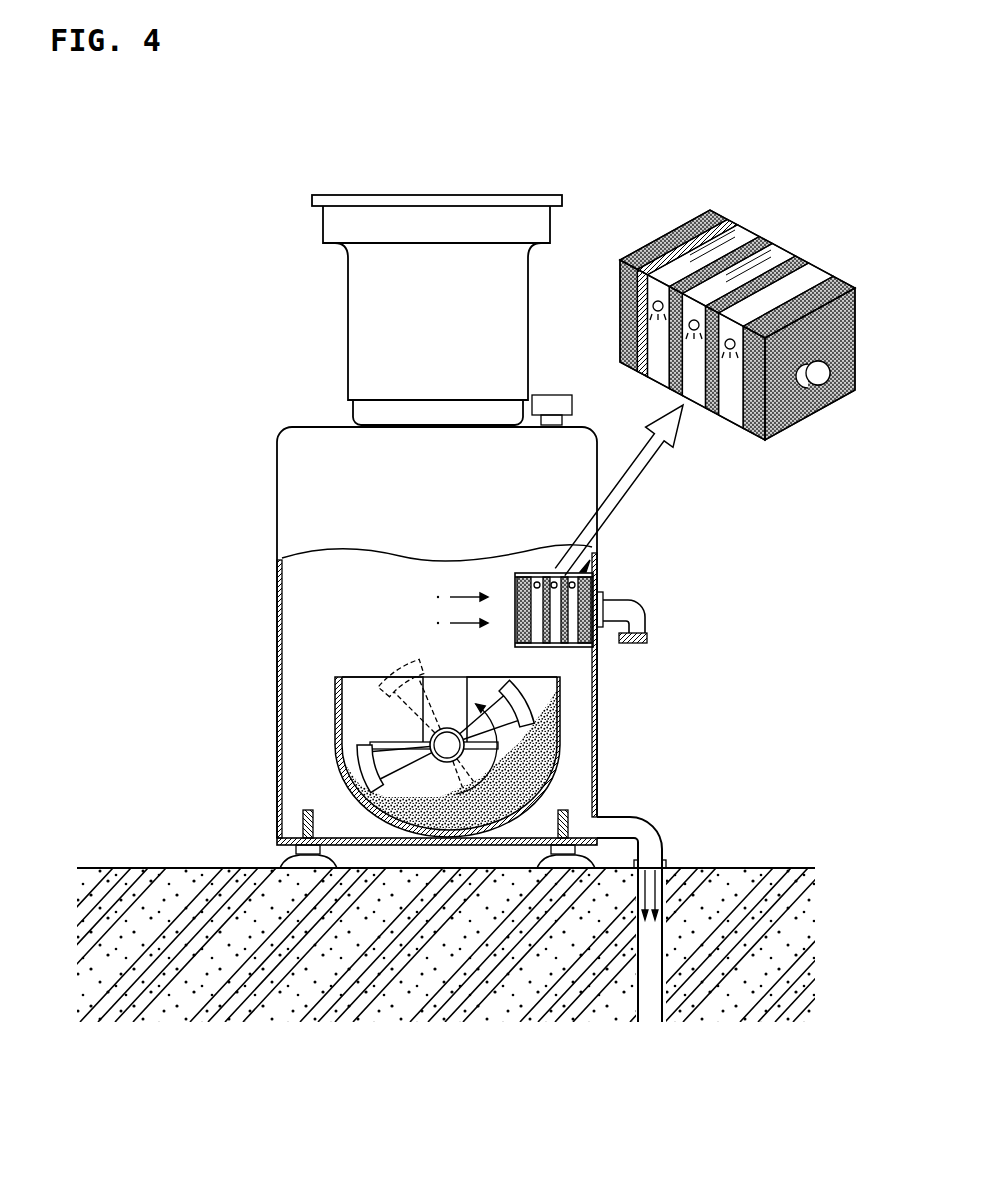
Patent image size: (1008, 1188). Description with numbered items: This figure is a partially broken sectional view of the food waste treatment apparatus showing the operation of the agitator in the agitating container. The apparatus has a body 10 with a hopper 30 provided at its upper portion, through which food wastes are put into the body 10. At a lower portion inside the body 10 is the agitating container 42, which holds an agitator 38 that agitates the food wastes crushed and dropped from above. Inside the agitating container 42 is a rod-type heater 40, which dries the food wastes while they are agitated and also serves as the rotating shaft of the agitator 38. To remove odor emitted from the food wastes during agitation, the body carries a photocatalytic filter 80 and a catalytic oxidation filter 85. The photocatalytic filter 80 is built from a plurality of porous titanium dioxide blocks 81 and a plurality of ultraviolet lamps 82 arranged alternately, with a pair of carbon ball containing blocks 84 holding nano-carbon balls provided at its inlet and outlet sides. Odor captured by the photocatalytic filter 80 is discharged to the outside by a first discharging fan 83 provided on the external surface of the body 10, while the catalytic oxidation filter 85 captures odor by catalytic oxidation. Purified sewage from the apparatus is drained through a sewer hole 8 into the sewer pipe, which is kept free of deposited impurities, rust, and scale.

The sewer hole 8 is at (631, 828).
The body 10 is at (288, 470).
The hopper 30 is at (512, 298).
The agitator 38 is at (363, 758).
The rod-type heater 40 is at (363, 805).
The agitating container 42 is at (335, 722).
The photocatalytic filter 80 is at (595, 554).
The titanium dioxide blocks 81 is at (690, 248).
The ultraviolet lamps 82 is at (648, 253).
The first discharging fan 83 is at (652, 638).
The carbon ball containing blocks 84 is at (837, 283).
The catalytic oxidation filter 85 is at (549, 392).